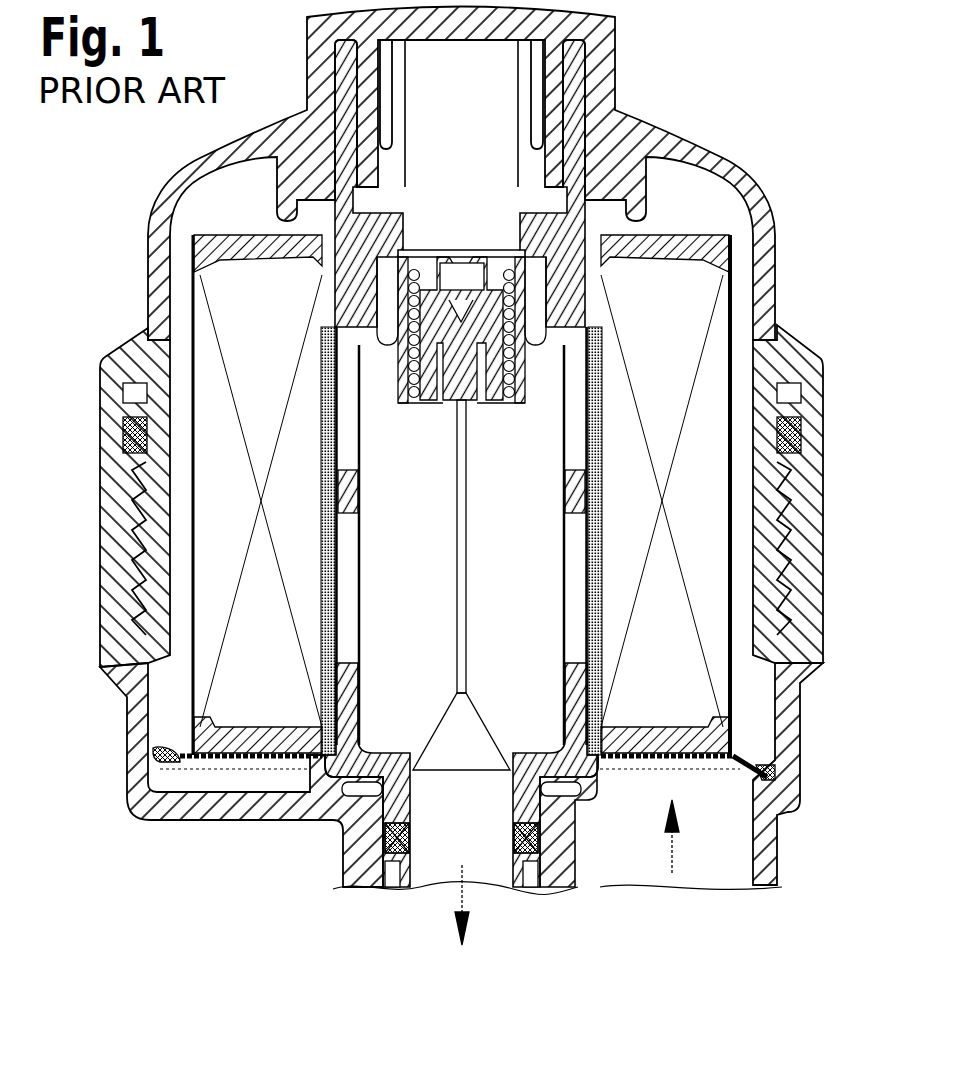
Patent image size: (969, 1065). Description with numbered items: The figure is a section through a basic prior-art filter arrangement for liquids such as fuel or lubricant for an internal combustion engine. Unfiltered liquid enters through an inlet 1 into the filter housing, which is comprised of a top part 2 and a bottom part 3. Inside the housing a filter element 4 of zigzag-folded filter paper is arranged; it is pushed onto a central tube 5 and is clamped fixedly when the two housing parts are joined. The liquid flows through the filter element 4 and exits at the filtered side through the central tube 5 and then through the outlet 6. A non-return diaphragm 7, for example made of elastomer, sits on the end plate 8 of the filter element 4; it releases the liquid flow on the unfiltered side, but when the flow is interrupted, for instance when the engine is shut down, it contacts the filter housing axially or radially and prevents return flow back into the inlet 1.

The inlet 1 is at (675, 865).
The top part 2 is at (748, 183).
The bottom part 3 is at (815, 556).
The filter element 4 is at (227, 305).
The central tube 5 is at (333, 797).
The outlet 6 is at (460, 898).
The non-return diaphragm 7 is at (150, 754).
The end plate 8 is at (733, 730).